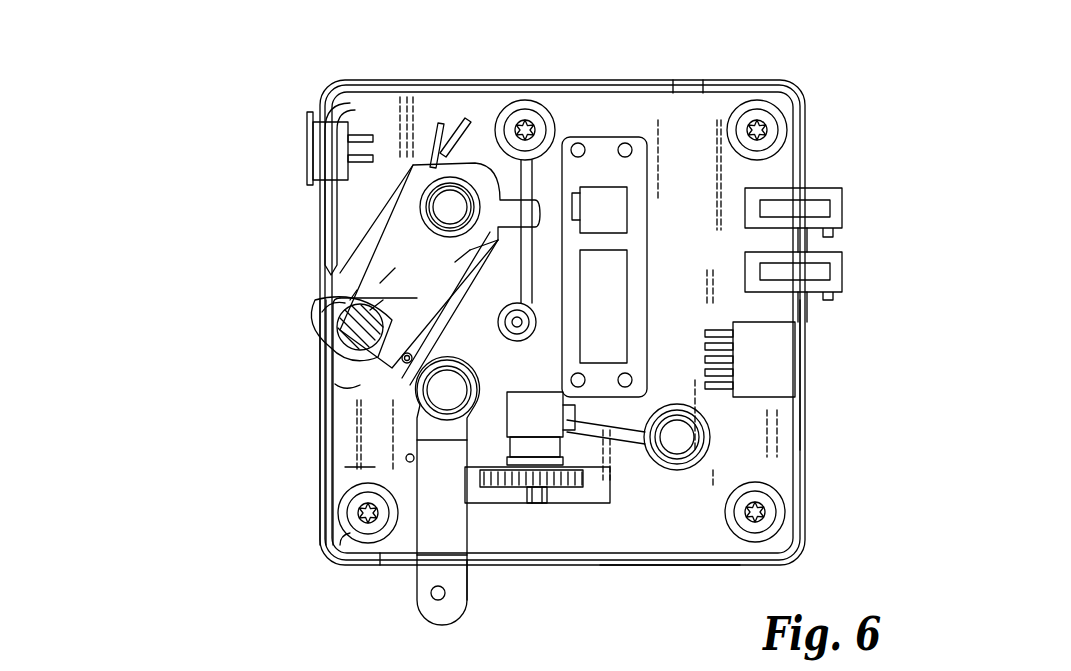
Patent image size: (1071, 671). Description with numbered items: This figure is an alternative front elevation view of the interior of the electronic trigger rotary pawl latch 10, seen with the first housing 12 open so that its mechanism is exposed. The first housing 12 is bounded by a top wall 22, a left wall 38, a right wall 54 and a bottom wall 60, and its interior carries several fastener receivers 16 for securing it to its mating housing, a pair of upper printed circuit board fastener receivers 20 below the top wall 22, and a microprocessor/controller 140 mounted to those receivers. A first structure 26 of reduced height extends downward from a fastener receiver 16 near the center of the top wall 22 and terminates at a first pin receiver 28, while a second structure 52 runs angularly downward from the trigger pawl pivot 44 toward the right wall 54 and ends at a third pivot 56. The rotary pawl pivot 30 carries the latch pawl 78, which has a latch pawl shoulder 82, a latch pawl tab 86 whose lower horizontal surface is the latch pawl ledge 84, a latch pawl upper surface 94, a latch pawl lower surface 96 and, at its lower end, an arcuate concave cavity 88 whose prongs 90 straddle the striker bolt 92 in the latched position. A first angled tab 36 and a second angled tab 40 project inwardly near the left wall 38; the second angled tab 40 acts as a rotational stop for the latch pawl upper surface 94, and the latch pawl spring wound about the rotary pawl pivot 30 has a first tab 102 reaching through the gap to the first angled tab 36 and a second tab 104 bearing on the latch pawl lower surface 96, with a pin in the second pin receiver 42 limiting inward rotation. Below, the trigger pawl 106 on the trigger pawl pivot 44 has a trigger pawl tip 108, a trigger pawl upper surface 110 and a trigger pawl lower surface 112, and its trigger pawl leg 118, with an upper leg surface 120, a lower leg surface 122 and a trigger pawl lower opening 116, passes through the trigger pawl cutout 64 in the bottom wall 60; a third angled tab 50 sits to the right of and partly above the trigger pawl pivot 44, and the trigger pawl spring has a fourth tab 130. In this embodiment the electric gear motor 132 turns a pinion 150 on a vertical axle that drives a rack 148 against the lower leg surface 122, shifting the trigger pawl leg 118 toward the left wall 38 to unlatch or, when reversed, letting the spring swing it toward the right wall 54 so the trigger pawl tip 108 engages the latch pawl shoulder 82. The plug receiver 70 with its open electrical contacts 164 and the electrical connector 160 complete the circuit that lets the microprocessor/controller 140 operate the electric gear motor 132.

The rotary pawl latch 10 is at (190, 108).
The first housing 12 is at (693, 133).
The fastener receivers 16 is at (528, 128).
The upper printed circuit board fastener receivers 20 is at (626, 148).
The top wall 22 is at (463, 83).
The first structure 26 is at (600, 180).
The first pin receiver 28 is at (560, 460).
The rotary pawl pivot 30 is at (478, 160).
The first angled tab 36 is at (462, 120).
The left wall 38 is at (327, 443).
The second angled tab 40 is at (357, 120).
The second pin receiver 42 is at (418, 410).
The trigger pawl pivot 44 is at (450, 395).
The third angled tab 50 is at (533, 440).
The second structure 52 is at (600, 430).
The right wall 54 is at (812, 433).
The third pivot 56 is at (687, 435).
The bottom wall 60 is at (728, 560).
The trigger pawl cutout 64 is at (403, 567).
The plug receiver 70 is at (327, 153).
The latch pawl 78 is at (387, 270).
The latch pawl shoulder 82 is at (455, 205).
The latch pawl ledge 84 is at (453, 273).
The latch pawl tab 86 is at (577, 200).
The arcuate concave cavity 88 is at (315, 298).
The prongs 90 is at (323, 313).
The striker bolt 92 is at (347, 337).
The latch pawl upper surface 94 is at (467, 260).
The latch pawl lower surface 96 is at (406, 458).
The first tab 102 is at (438, 128).
The second tab 104 is at (383, 300).
The trigger pawl 106 is at (452, 385).
The trigger pawl tip 108 is at (480, 247).
The trigger pawl upper surface 110 is at (357, 290).
The trigger pawl lower surface 112 is at (567, 420).
The trigger pawl lower opening 116 is at (440, 597).
The trigger pawl leg 118 is at (448, 491).
The upper leg surface 120 is at (345, 532).
The lower leg surface 122 is at (468, 565).
The fourth tab 130 is at (360, 467).
The electric gear motor 132 is at (540, 497).
The microprocessor/controller 140 is at (615, 287).
The rack 148 is at (488, 487).
The pinion 150 is at (528, 503).
The electrical connector 160 is at (775, 350).
The open electrical contacts 164 is at (327, 100).